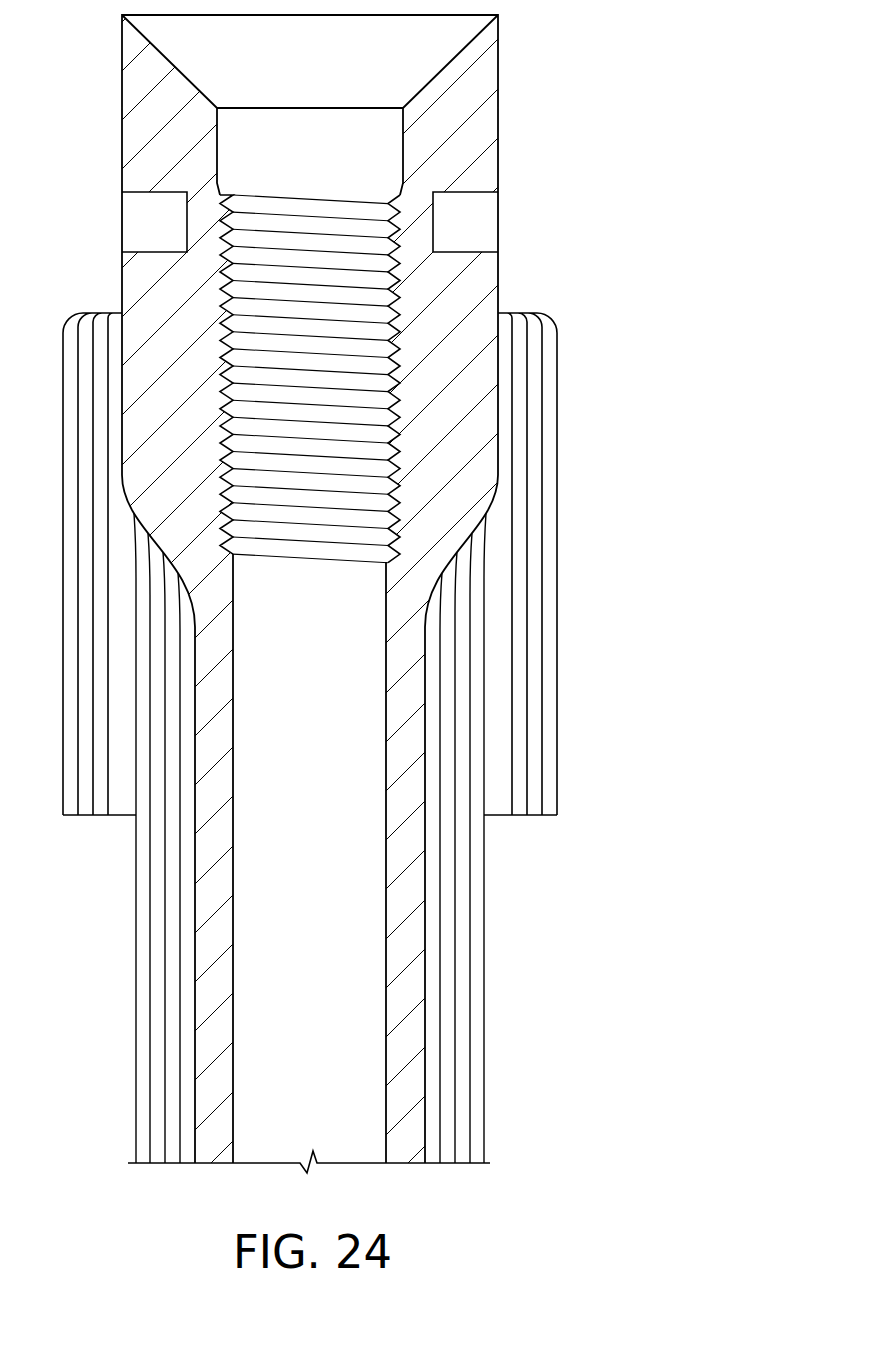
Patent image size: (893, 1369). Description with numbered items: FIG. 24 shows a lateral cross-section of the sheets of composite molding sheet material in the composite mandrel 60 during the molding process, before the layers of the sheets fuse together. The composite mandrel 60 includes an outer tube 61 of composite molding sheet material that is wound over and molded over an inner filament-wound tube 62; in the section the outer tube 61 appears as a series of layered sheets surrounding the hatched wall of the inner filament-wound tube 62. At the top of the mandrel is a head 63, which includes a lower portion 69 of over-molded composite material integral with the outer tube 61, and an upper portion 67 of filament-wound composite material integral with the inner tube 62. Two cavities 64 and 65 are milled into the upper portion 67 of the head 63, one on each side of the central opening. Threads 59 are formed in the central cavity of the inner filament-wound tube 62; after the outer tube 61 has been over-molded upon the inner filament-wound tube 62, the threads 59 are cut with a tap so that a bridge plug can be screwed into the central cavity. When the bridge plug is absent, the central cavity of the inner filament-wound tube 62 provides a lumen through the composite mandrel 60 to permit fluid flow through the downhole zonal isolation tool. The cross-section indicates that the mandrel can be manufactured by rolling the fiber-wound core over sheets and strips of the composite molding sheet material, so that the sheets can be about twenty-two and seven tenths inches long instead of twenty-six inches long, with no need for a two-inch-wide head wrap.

The threads 59 is at (375, 296).
The composite mandrel 60 is at (648, 168).
The outer tube 61 is at (462, 924).
The inner filament-wound tube 62 is at (405, 1038).
The head 63 is at (387, 738).
The cavity 64 is at (142, 218).
The cavity 65 is at (478, 218).
The upper portion 67 is at (498, 98).
The lower portion 69 is at (532, 513).